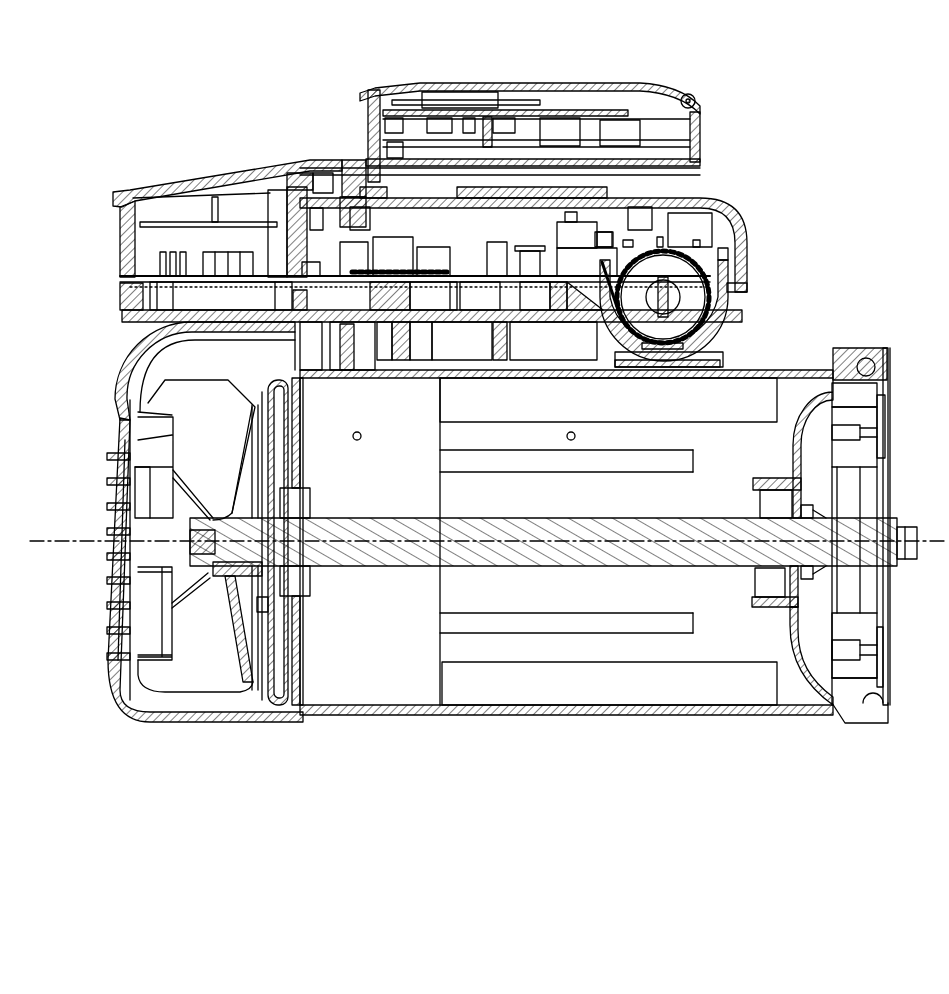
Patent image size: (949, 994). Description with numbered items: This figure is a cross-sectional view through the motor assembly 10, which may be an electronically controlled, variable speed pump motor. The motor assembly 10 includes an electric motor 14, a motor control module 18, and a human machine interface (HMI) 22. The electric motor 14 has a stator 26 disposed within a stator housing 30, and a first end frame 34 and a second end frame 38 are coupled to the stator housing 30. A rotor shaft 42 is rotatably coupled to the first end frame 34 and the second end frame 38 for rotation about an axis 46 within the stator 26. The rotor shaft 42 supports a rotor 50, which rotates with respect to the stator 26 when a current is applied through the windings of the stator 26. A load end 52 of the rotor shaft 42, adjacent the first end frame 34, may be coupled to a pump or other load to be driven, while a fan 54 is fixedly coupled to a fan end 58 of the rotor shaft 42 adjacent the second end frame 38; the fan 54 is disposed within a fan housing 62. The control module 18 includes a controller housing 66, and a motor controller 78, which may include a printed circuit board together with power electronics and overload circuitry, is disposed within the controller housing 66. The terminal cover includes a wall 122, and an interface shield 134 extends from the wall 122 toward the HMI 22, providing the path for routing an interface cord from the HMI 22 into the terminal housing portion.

The motor assembly 10 is at (125, 72).
The electric motor 14 is at (897, 356).
The motor control module 18 is at (757, 247).
The human machine interface (HMI) 22 is at (653, 80).
The stator 26 is at (726, 400).
The stator housing 30 is at (766, 716).
The first end frame 34 is at (796, 451).
The second end frame 38 is at (290, 640).
The rotor shaft 42 is at (728, 560).
The axis 46 is at (86, 541).
The rotor 50 is at (596, 625).
The load end 52 is at (880, 518).
The fan 54 is at (183, 665).
The fan end 58 is at (192, 570).
The fan housing 62 is at (200, 722).
The controller housing 66 is at (722, 203).
The motor controller 78 is at (368, 245).
The wall 122 is at (200, 176).
The interface shield 134 is at (324, 161).